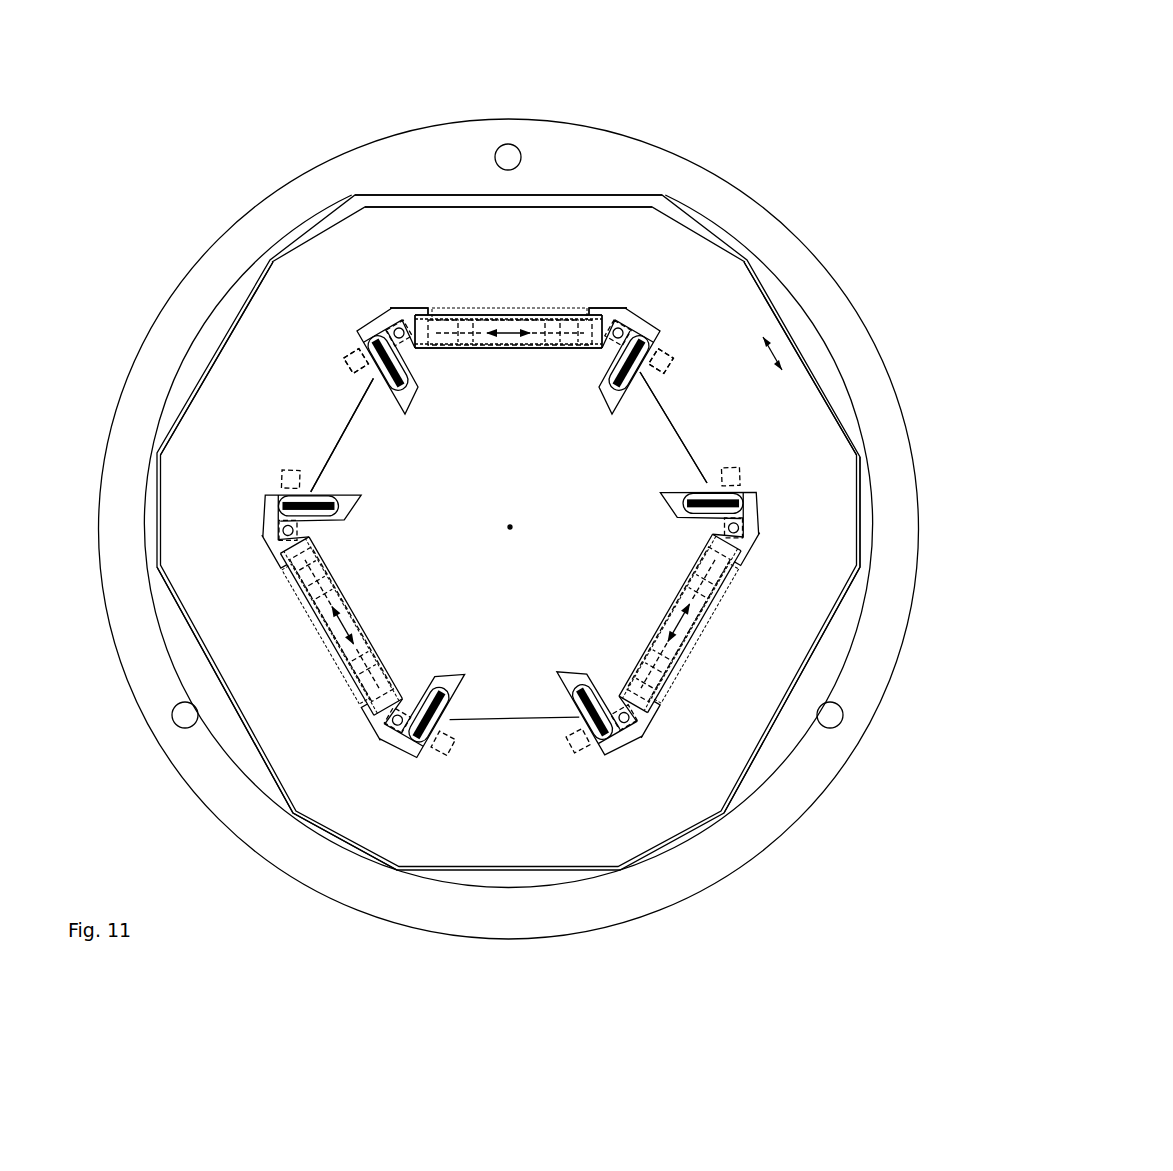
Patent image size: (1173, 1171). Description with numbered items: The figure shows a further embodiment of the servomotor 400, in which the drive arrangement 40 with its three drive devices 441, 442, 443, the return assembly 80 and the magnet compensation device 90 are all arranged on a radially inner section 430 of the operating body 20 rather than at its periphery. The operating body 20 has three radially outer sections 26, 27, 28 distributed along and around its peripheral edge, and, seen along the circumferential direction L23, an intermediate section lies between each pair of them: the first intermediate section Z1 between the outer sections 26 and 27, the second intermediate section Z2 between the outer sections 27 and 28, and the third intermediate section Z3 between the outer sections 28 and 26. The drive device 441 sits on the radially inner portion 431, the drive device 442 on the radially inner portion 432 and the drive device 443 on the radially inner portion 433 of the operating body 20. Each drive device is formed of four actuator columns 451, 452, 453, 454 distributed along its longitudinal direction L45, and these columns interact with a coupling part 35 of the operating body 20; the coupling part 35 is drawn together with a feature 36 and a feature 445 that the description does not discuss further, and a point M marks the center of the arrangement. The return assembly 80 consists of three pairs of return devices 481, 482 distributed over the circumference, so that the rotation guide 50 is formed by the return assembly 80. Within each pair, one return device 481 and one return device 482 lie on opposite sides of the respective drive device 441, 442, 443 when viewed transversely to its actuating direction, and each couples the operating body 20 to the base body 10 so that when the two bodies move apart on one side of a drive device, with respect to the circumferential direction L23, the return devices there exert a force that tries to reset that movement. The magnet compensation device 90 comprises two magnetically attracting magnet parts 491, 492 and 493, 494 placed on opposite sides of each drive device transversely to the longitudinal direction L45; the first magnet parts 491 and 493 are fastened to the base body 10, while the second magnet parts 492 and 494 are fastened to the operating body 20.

The base body 10 is at (712, 888).
The operating body 20 is at (572, 862).
The drive arrangement 40 is at (473, 238).
The servomotor 400 is at (792, 108).
The drive device 441 is at (283, 712).
The drive device 442 is at (553, 230).
The drive device 443 is at (778, 632).
The radially outer section 26 is at (236, 689).
The radially outer section 27 is at (491, 243).
The radially outer section 28 is at (745, 683).
The coupling part 35 is at (464, 349).
The guide bar slot 36 is at (588, 264).
The actuator column 451 is at (448, 319).
The actuator column 452 is at (483, 330).
The actuator column 453 is at (527, 340).
The actuator column 454 is at (567, 338).
The bar edge 445 is at (540, 350).
The rotation guide 50 is at (360, 328).
The return device 481 is at (380, 387).
The return device 482 is at (620, 361).
The first magnet part 491 is at (352, 360).
The second magnet part 492 is at (395, 328).
The first magnet part 493 is at (619, 328).
The second magnet part 494 is at (670, 362).
The radially inner section 430 is at (347, 450).
The radially inner portion 431 is at (348, 572).
The radially inner portion 432 is at (528, 420).
The radially inner portion 433 is at (668, 592).
The return assembly 80 is at (708, 316).
The magnet compensation device 90 is at (681, 287).
The circumferential direction L23 is at (772, 353).
The longitudinal direction L45 is at (505, 342).
The center point M is at (520, 522).
The first intermediate section Z1 is at (449, 450).
The second intermediate section Z2 is at (678, 426).
The third intermediate section Z3 is at (515, 731).